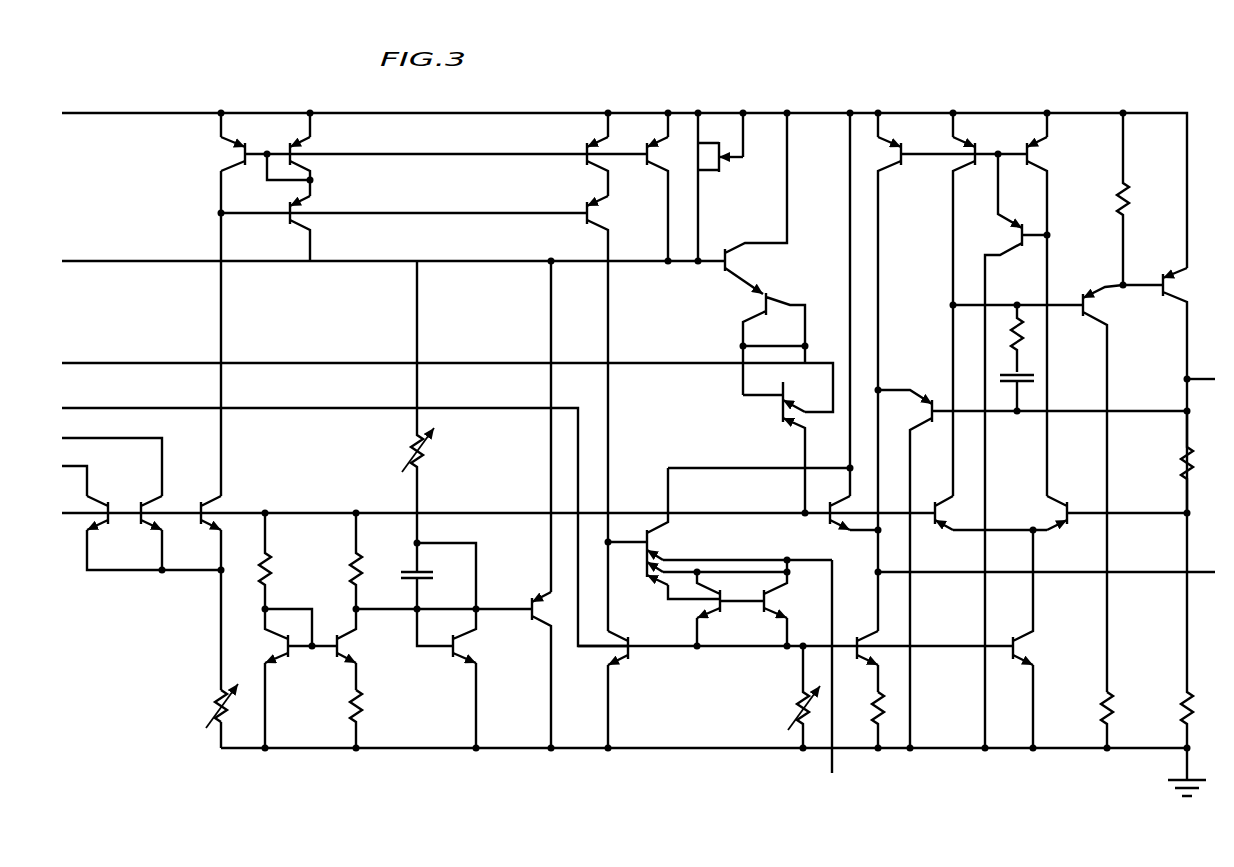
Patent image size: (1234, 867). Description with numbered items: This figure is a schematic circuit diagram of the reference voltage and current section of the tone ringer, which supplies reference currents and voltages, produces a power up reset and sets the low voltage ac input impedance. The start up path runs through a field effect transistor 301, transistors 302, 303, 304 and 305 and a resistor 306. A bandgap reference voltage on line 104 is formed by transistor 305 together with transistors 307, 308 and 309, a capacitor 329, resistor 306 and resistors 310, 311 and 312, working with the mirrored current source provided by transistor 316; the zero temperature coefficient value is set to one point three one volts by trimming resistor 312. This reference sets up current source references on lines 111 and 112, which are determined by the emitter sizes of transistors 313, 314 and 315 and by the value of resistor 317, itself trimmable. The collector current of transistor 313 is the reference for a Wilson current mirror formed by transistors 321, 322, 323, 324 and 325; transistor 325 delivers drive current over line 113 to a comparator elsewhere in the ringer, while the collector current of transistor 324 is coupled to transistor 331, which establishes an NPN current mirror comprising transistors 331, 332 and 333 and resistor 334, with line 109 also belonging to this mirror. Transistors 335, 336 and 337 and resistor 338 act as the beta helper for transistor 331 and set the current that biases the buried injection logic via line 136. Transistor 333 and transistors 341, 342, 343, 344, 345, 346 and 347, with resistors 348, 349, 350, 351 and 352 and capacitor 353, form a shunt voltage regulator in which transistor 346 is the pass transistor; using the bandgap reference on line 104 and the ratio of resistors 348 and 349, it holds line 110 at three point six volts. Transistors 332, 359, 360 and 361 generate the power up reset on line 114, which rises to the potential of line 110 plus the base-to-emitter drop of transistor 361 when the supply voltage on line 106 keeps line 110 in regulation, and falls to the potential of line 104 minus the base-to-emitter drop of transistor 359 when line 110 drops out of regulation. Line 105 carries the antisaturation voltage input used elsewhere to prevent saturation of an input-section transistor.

The line 104 is at (482, 512).
The line 105 is at (431, 381).
The line 106 is at (608, 184).
The line 109 is at (329, 521).
The line 110 is at (1208, 368).
The line 111 is at (96, 461).
The line 112 is at (58, 475).
The line 113 is at (377, 260).
The line 114 is at (1053, 571).
The line 136 is at (835, 680).
The field effect transistor 301 is at (722, 189).
The transistor 302 is at (756, 203).
The transistor 303 is at (761, 343).
The transistor 304 is at (787, 446).
The transistor 305 is at (289, 678).
The resistor 306 is at (287, 580).
The transistor 307 is at (360, 649).
The transistor 308 is at (476, 678).
The transistor 309 is at (554, 503).
The resistor 310 is at (441, 561).
The resistor 311 is at (373, 719).
The resistor 312 is at (439, 435).
The transistor 313 is at (227, 523).
The transistor 314 is at (166, 523).
The transistor 315 is at (154, 521).
The transistor 316 is at (666, 189).
The resistor 317 is at (208, 706).
The transistor 321 is at (249, 146).
The transistor 322 is at (468, 148).
The transistor 323 is at (614, 154).
The transistor 324 is at (614, 413).
The transistor 325 is at (403, 220).
The capacitor 329 is at (440, 604).
The transistor 331 is at (631, 689).
The transistor 332 is at (861, 650).
The transistor 333 is at (1040, 639).
The resistor 334 is at (863, 720).
The transistor 335 is at (720, 533).
The transistor 336 is at (715, 611).
The transistor 337 is at (789, 605).
The resistor 338 is at (790, 696).
The transistor 341 is at (991, 515).
The transistor 342 is at (1102, 513).
The transistor 343 is at (949, 304).
The transistor 344 is at (1011, 450).
The transistor 345 is at (1051, 304).
The pass transistor 346 is at (1169, 390).
The transistor 347 is at (1044, 488).
The resistor 348 is at (1176, 654).
The resistor 349 is at (1205, 464).
The resistor 350 is at (1087, 720).
The resistor 351 is at (1026, 340).
The resistor 352 is at (1107, 201).
The capacitor 353 is at (1028, 377).
The transistor 359 is at (845, 522).
The transistor 360 is at (943, 372).
The transistor 361 is at (1034, 569).